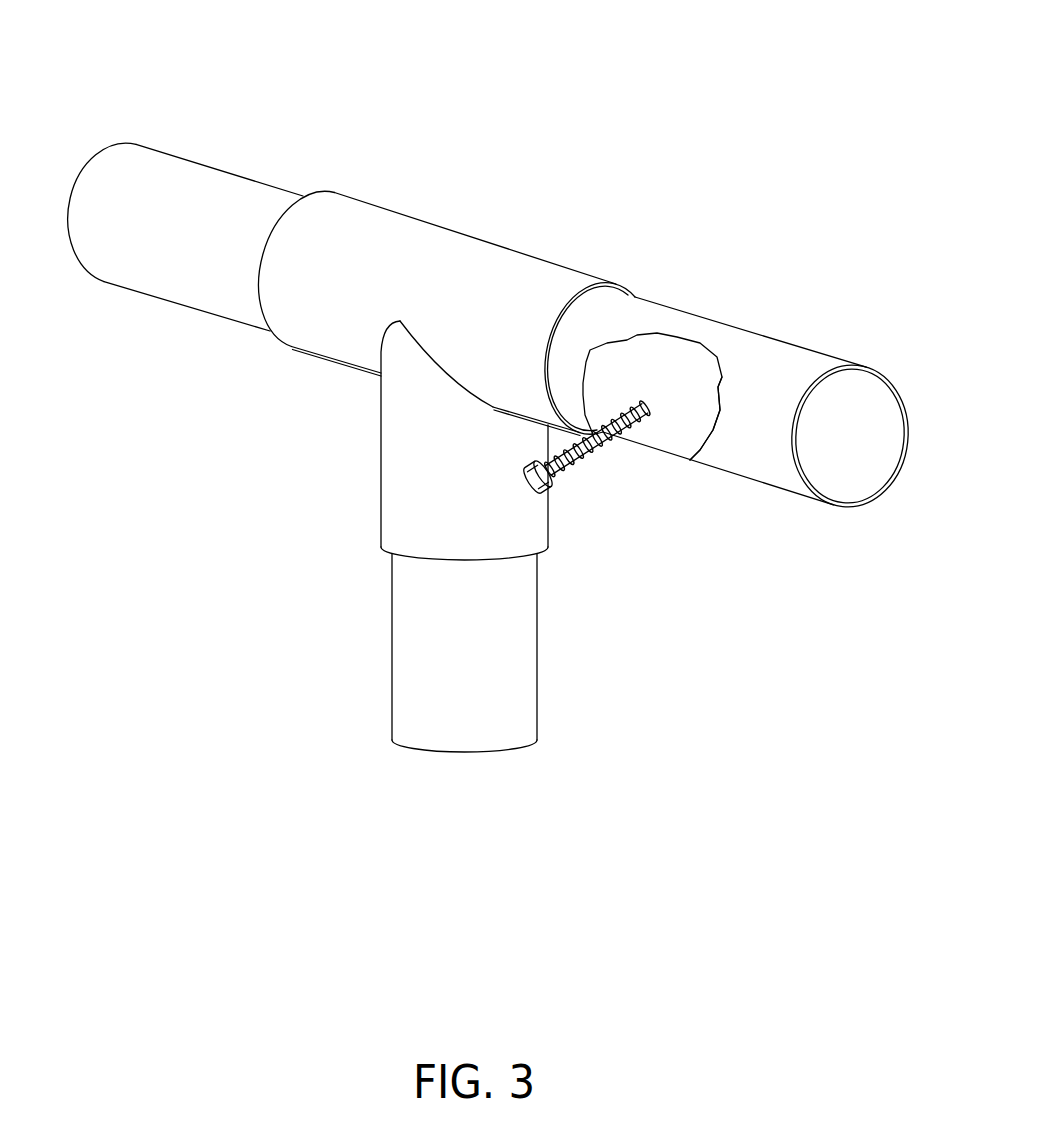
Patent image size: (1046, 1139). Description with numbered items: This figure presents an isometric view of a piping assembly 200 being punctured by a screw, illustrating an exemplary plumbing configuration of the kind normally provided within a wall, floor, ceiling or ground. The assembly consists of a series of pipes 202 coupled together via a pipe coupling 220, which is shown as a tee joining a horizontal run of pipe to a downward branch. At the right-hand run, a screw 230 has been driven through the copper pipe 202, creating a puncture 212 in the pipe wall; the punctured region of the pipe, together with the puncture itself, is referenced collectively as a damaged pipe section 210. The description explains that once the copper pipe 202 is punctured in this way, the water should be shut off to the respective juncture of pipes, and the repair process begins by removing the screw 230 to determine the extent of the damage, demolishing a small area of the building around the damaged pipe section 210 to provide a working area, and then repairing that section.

The piping assembly 200 is at (216, 70).
The copper pipe 202 is at (188, 282).
The damaged pipe section 210 is at (673, 368).
The puncture 212 is at (656, 410).
The pipe coupling 220 is at (347, 338).
The screw 230 is at (594, 447).